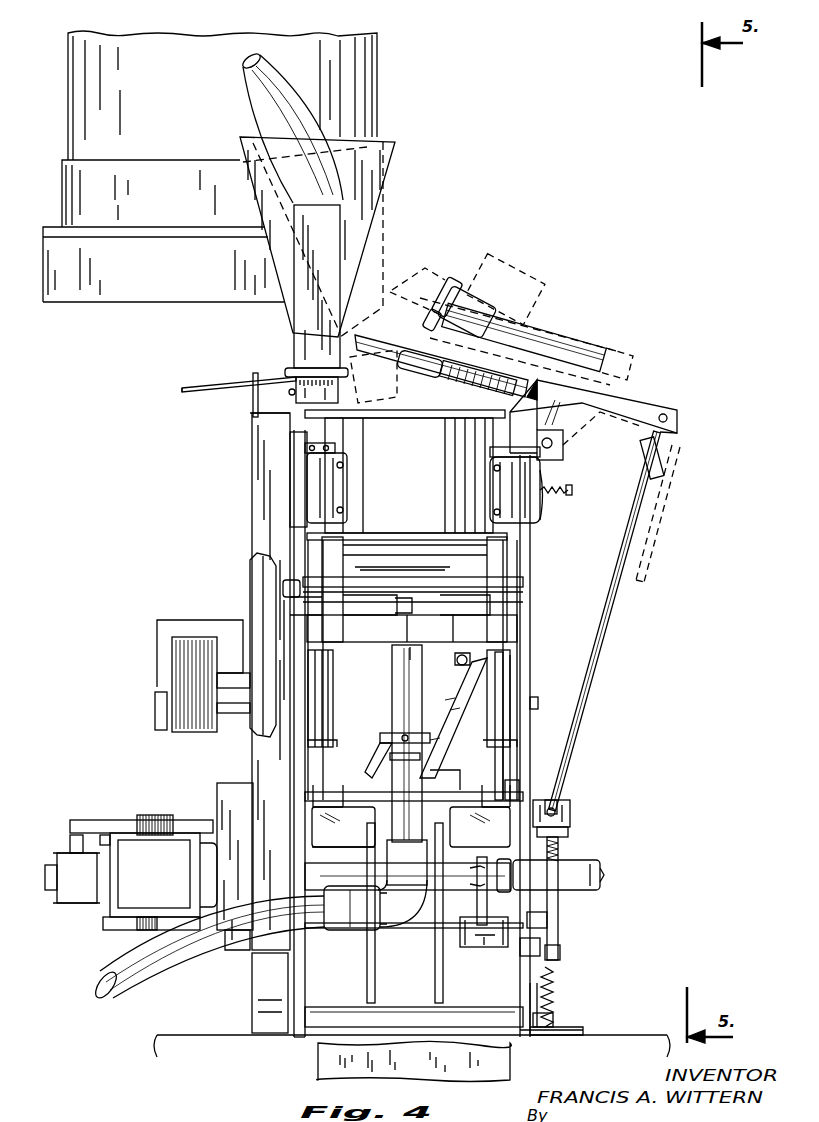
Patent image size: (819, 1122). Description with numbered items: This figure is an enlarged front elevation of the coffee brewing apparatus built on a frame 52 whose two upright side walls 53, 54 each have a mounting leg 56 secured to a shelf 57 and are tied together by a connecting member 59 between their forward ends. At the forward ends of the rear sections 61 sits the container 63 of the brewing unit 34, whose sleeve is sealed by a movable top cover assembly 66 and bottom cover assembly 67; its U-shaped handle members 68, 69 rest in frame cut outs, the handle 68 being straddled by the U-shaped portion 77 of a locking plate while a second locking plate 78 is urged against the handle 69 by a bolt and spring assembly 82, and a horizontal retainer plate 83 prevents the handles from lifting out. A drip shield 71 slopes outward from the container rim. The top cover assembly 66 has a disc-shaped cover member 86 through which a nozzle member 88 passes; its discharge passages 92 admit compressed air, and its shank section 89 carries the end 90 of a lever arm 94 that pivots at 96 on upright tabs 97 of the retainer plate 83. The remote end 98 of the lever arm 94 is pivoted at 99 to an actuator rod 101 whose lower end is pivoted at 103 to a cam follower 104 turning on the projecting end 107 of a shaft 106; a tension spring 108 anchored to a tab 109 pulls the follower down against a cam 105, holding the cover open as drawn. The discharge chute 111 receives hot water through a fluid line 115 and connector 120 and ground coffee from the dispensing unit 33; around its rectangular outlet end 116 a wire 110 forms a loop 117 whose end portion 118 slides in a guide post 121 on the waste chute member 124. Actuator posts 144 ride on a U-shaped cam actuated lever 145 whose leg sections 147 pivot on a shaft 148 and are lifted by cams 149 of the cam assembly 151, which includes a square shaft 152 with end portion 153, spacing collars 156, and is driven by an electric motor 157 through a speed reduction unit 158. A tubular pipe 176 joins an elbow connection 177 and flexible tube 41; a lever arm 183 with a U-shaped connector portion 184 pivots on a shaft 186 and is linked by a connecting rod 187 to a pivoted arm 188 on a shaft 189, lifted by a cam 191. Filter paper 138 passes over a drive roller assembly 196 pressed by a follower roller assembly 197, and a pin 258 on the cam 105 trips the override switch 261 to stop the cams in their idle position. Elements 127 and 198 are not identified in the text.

The coffee dispensing unit 33 is at (365, 75).
The brewing unit 34 is at (252, 527).
The flexible tube 41 is at (183, 942).
The frame 52 is at (537, 630).
The side wall 53 is at (307, 985).
The side wall 54 is at (525, 752).
The mounting leg 56 is at (565, 1030).
The shelf 57 is at (625, 1035).
The connecting member 59 is at (462, 1015).
The rear section 61 is at (532, 538).
The container 63 is at (358, 470).
The top cover assembly 66 is at (460, 290).
The bottom cover assembly 67 is at (395, 639).
The handle member 68 is at (350, 495).
The handle member 69 is at (488, 493).
The drip shield 71 is at (340, 415).
The U-shaped portion 77 is at (305, 480).
The second locking plate 78 is at (542, 505).
The bolt and spring assembly 82 is at (568, 487).
The retainer plate 83 is at (318, 450).
The cover member 86 is at (390, 375).
The nozzle member 88 is at (430, 345).
The shank section 89 is at (455, 296).
The lever arm end 90 is at (435, 318).
The discharge passages 92 is at (440, 378).
The lever arm 94 is at (612, 403).
The pivot 96 is at (553, 446).
The upright tabs 97 is at (587, 350).
The lever arm end 98 is at (677, 430).
The pivotal connection 99 is at (664, 413).
The actuator rod 101 is at (610, 648).
The pivotal connection 103 is at (570, 820).
The cam follower 104 is at (560, 805).
The cam 105 is at (559, 945).
The shaft 106 is at (565, 810).
The shaft end 107 is at (520, 795).
The tension spring 108 is at (555, 985).
The tab 109 is at (560, 1012).
The wire 110 is at (232, 382).
The discharge chute 111 is at (285, 273).
The fluid line 115 is at (272, 75).
The outlet end 116 is at (288, 393).
The loop 117 is at (298, 373).
The wire end portion 118 is at (184, 386).
The connector 120 is at (300, 338).
The guide post 121 is at (253, 408).
The waste chute member 124 is at (255, 462).
The box 127 is at (268, 977).
The filter paper 138 is at (510, 1063).
The actuator posts 144 is at (335, 690).
The cam actuated lever 145 is at (374, 838).
The leg sections 147 is at (342, 830).
The shaft 148 is at (370, 753).
The cams 149 is at (437, 965).
The cam assembly 151 is at (573, 899).
The shaft 152 is at (507, 884).
The shaft end portion 153 is at (200, 890).
The spacing collars 156 is at (578, 862).
The electric motor 157 is at (129, 872).
The speed reduction unit 158 is at (232, 800).
The tubular pipe 176 is at (397, 710).
The elbow connection 177 is at (345, 930).
The lever arm 183 is at (450, 700).
The connector portion 184 is at (380, 740).
The shaft 186 is at (538, 703).
The connecting rod 187 is at (468, 753).
The pivoted arm 188 is at (461, 947).
The shaft 189 is at (430, 926).
The cam 191 is at (484, 905).
The drive roller assembly 196 is at (330, 563).
The follower roller assembly 197 is at (390, 640).
The motor 198 is at (165, 630).
The pin 258 is at (538, 957).
The override switch 261 is at (548, 927).